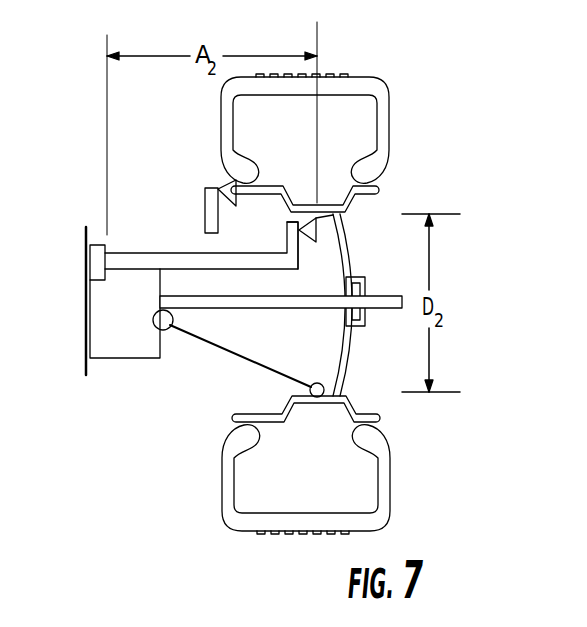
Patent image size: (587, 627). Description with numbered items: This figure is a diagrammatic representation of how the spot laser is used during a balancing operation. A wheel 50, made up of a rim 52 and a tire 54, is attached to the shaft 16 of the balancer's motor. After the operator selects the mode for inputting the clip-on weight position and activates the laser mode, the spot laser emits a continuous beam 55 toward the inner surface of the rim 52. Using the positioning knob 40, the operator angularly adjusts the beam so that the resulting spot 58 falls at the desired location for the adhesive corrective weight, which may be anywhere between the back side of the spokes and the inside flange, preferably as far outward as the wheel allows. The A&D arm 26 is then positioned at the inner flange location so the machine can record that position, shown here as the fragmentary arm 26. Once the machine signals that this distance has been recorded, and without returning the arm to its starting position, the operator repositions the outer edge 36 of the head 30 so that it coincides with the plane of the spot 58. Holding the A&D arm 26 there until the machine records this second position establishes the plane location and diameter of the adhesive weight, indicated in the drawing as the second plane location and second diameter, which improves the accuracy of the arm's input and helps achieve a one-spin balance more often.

The shaft 16 is at (234, 309).
The A&D arm 26 is at (150, 258).
The head 30 is at (306, 237).
The outer edge 36 is at (318, 230).
The positioning knob 40 is at (167, 331).
The wheel 50 is at (420, 151).
The rim 52 is at (253, 412).
The tire 54 is at (393, 478).
The continuous beam 55 is at (233, 352).
The spot 58 is at (317, 383).